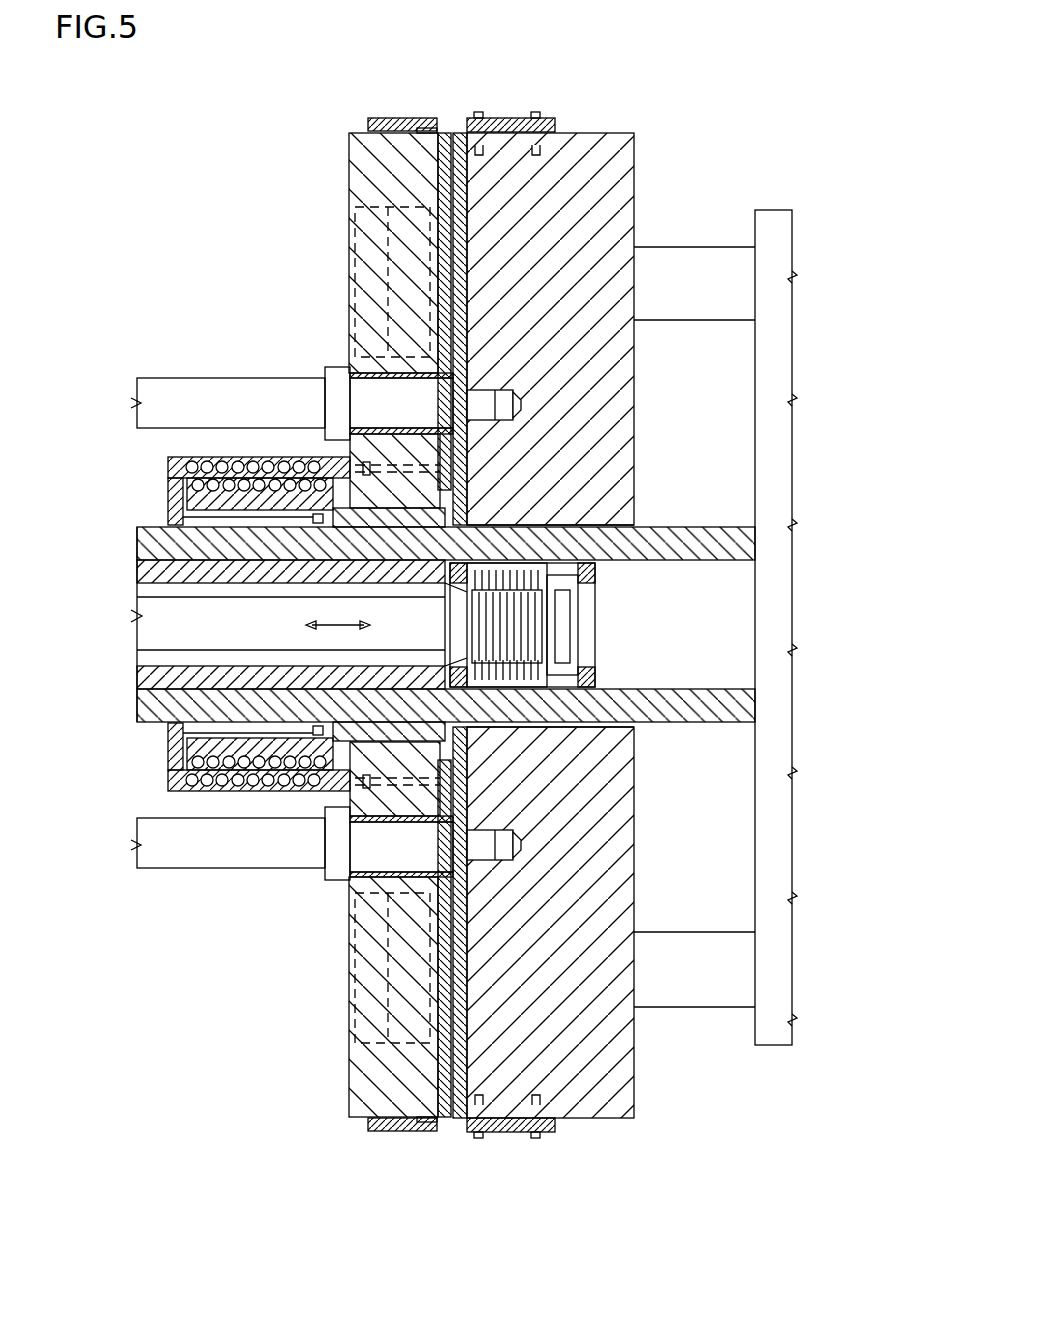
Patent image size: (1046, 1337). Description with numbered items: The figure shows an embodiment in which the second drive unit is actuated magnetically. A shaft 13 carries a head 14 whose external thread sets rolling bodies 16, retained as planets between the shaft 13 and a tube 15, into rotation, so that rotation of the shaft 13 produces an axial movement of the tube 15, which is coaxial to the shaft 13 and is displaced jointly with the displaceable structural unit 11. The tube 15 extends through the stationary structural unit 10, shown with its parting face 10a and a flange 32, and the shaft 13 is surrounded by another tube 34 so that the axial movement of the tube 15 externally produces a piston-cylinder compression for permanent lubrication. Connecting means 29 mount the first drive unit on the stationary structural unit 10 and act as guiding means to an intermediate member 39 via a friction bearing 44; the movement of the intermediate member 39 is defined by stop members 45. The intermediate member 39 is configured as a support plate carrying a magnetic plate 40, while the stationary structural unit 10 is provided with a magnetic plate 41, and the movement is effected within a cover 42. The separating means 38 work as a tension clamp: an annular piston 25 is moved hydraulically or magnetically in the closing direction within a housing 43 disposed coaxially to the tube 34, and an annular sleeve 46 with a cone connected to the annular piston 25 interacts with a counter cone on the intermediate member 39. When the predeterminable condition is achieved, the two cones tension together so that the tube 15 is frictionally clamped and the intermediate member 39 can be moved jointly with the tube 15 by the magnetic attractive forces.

The stationary structural unit 10 is at (620, 152).
The housing parting face 10a is at (537, 732).
The displaceable structural unit 11 is at (770, 225).
The shaft 13 is at (254, 636).
The head 14 is at (548, 622).
The tube 15 is at (150, 527).
The rolling bodies 16 is at (530, 678).
The annular piston 25 is at (200, 500).
The connecting means 29 is at (143, 410).
The flange 32 is at (680, 268).
The tube 34 is at (150, 568).
The separating means 38 is at (237, 447).
The intermediate member 39 is at (365, 172).
The magnetic plate 40 is at (437, 117).
The magnetic plate 41 is at (470, 122).
The cover 42 is at (513, 117).
The housing 43 is at (170, 483).
The friction bearing 44 is at (385, 430).
The stop members 45 is at (383, 505).
The annular sleeve 46 is at (348, 432).